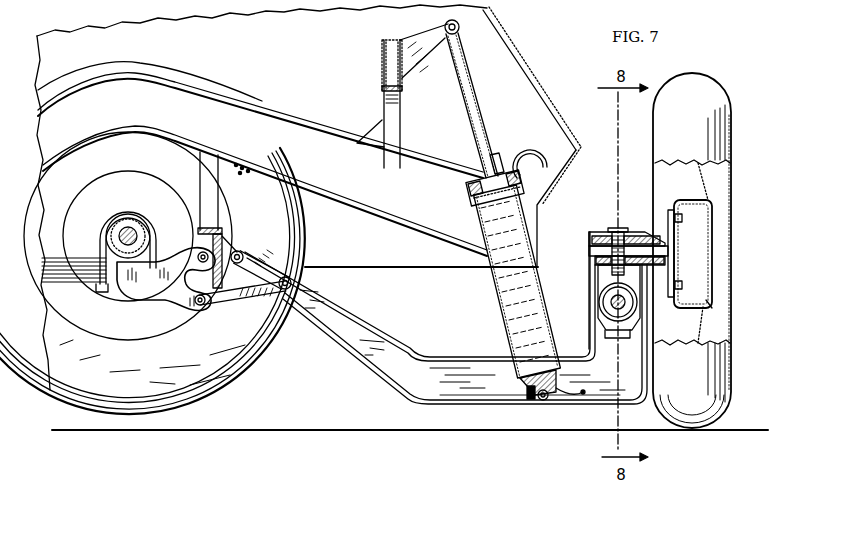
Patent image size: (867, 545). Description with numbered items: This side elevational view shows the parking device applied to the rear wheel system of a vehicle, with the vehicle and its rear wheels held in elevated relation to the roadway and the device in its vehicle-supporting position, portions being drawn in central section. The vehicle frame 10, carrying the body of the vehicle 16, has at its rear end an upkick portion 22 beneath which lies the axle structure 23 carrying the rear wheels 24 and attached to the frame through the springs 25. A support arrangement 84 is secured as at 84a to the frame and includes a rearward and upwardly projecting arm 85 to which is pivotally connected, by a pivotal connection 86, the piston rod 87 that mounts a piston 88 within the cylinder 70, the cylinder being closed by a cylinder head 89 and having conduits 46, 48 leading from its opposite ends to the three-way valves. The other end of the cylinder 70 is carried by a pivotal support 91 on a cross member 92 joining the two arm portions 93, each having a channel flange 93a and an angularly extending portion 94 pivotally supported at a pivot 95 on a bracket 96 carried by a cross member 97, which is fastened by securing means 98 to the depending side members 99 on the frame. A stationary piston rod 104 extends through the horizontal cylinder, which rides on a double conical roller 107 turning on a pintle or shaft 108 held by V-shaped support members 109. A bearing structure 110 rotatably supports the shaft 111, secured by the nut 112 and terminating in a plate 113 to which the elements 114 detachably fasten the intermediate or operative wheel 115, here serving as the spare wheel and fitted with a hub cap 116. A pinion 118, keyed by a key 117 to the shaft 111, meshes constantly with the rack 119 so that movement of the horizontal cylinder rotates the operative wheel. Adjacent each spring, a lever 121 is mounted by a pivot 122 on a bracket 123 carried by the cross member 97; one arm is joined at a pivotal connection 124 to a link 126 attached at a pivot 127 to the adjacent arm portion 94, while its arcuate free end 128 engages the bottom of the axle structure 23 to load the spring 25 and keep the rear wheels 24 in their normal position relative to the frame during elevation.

The vehicle frame 10 is at (430, 172).
The body of the vehicle 16 is at (527, 77).
The upkick portion 22 is at (250, 101).
The axle structure 23 is at (125, 226).
The rear wheels 24 is at (260, 355).
The springs 25 is at (58, 283).
The conduit 46 is at (580, 396).
The conduit 48 is at (524, 150).
The cylinder 70 is at (495, 292).
The support arrangement 84 is at (392, 118).
The securing point 84a is at (375, 165).
The rearward and upwardly projecting arm 85 is at (427, 52).
The pivotal connection 86 is at (461, 27).
The piston rod 87 is at (470, 98).
The piston 88 is at (480, 199).
The cylinder head 89 is at (498, 160).
The pivotal support 91 is at (545, 401).
The cross member 92 is at (528, 400).
The arm portions 93 is at (473, 406).
The channel flange 93a is at (508, 407).
The angularly extending portion 94 is at (383, 361).
The pivot 95 is at (256, 252).
The bracket 96 is at (238, 250).
The cross member 97 is at (207, 222).
The securing means 98 is at (243, 167).
The depending side members 99 is at (210, 172).
The stationary piston rod 104 is at (608, 305).
The double conical roller 107 is at (642, 370).
The pintle or shaft 108 is at (605, 335).
The V-shaped support members 109 is at (589, 285).
The bearing structure 110 is at (595, 261).
The shaft 111 is at (649, 250).
The nut 112 is at (589, 246).
The plate 113 is at (673, 247).
The elements 114 is at (683, 285).
The intermediate or operative wheel 115 is at (704, 376).
The hub cap 116 is at (716, 253).
The key 117 is at (608, 232).
The pinion 118 is at (621, 228).
The rack 119 is at (707, 310).
The lever 121 is at (170, 287).
The pivot 122 is at (215, 335).
The bracket 123 is at (218, 227).
The pivotal connection 124 is at (200, 306).
The link 126 is at (278, 332).
The pivot 127 is at (292, 283).
The free end 128 is at (128, 258).